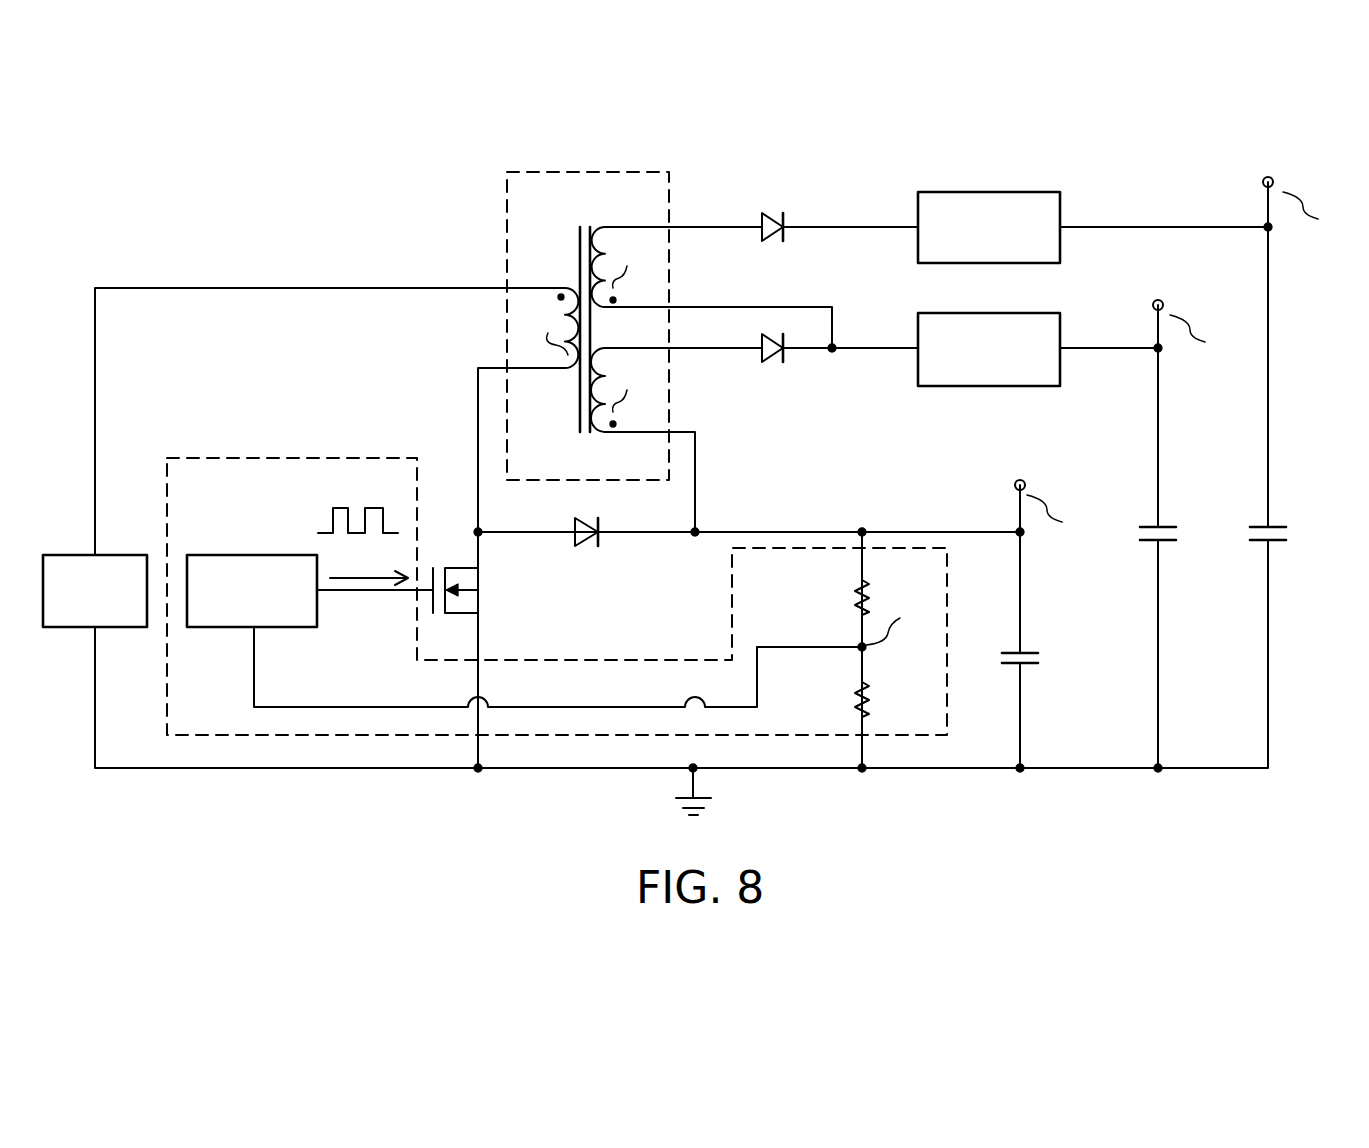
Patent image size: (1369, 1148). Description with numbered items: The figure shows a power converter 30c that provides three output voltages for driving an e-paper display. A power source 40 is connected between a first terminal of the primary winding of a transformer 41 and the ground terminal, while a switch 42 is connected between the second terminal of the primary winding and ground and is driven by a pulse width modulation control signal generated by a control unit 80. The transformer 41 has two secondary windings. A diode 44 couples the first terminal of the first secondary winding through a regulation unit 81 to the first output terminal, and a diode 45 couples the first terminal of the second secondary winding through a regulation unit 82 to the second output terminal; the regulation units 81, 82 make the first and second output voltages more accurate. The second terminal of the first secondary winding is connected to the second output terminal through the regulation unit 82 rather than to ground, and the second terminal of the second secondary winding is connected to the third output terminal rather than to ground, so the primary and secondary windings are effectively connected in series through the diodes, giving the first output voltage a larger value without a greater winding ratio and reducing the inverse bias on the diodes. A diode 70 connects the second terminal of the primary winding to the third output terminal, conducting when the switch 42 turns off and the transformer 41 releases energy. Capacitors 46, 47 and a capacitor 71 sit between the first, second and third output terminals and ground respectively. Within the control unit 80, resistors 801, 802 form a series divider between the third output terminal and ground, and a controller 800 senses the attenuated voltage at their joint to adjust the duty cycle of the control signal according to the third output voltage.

The power converter 30c is at (122, 123).
The power source 40 is at (127, 553).
The transformer 41 is at (588, 171).
The switch 42 is at (463, 555).
The diode 44 is at (773, 213).
The diode 45 is at (773, 368).
The capacitor 46 is at (1280, 520).
The capacitor 47 is at (1168, 520).
The diode 70 is at (586, 552).
The capacitor 71 is at (1029, 650).
The control unit 80 is at (252, 456).
The controller 800 is at (256, 553).
The resistor 801 is at (855, 593).
The resistor 802 is at (855, 691).
The regulation unit 81 is at (923, 192).
The regulation unit 82 is at (923, 312).